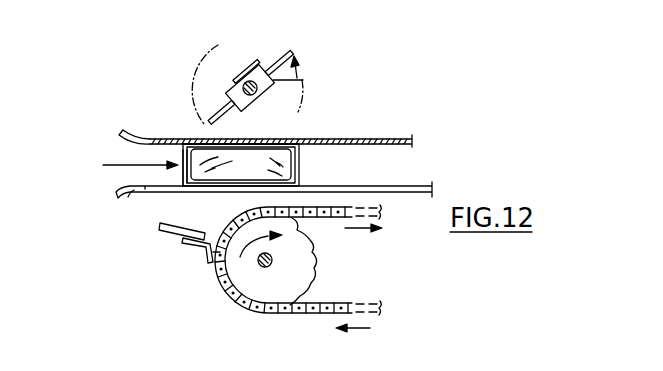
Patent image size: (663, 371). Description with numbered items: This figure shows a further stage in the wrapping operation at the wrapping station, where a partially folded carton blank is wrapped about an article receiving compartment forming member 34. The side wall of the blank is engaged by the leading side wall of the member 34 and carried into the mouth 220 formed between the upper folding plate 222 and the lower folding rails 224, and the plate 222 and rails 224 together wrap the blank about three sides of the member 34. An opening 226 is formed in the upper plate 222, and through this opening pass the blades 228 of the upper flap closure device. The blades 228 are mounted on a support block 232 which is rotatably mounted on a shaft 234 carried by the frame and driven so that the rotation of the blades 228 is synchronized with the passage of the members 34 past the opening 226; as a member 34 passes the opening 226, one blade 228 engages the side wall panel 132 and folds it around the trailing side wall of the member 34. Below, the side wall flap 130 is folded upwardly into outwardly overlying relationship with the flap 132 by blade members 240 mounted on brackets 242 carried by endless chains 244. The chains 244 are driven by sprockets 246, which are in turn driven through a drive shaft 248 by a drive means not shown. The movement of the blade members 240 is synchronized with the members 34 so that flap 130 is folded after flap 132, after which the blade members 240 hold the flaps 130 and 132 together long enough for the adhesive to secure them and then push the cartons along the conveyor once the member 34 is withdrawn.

The article receiving compartment forming member 34 is at (299, 172).
The side wall flap 130 is at (188, 172).
The side wall panel 132 is at (184, 147).
The mouth 220 is at (121, 180).
The upper folding plate 222 is at (148, 131).
The lower folding rails 224 is at (128, 197).
The opening 226 is at (262, 137).
The blades 228 is at (280, 60).
The support block 232 is at (303, 80).
The shaft 234 is at (249, 84).
The blade members 240 is at (172, 238).
The brackets 242 is at (194, 250).
The endless chains 244 is at (270, 313).
The sprockets 246 is at (300, 275).
The drive shaft 248 is at (273, 258).